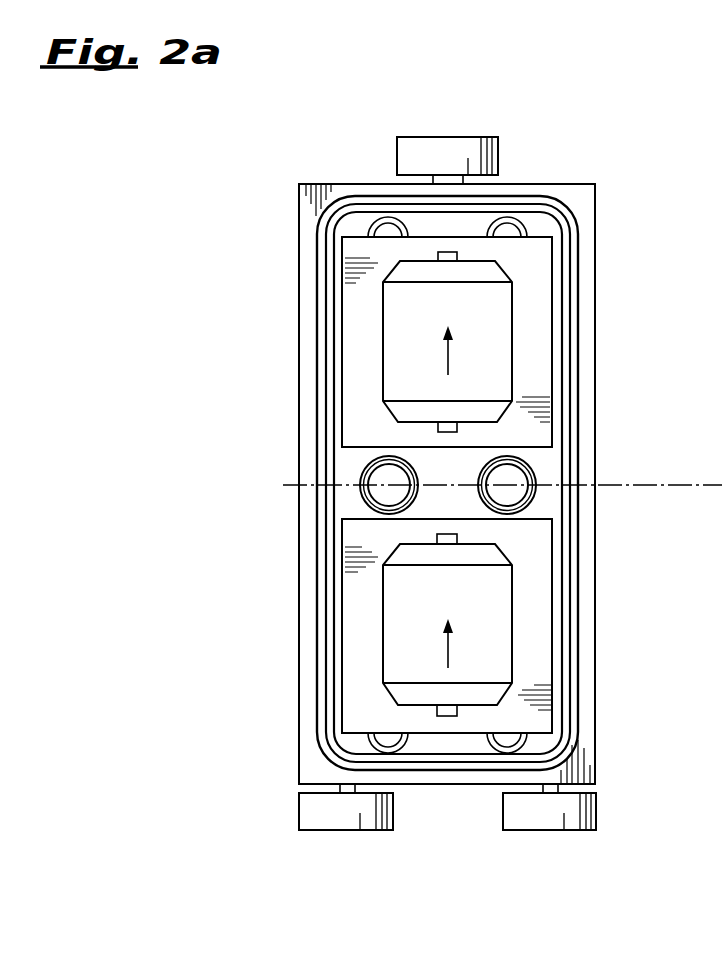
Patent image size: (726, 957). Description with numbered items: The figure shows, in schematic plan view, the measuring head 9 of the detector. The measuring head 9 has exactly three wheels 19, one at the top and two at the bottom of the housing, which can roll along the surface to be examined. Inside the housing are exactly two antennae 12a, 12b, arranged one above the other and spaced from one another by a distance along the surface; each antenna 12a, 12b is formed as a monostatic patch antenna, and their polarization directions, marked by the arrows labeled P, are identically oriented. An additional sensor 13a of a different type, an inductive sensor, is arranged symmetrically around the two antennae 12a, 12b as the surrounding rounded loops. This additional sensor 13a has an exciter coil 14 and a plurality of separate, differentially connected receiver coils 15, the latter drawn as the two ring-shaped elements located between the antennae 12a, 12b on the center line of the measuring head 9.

The measuring head 9 is at (358, 157).
The antenna 12a is at (501, 319).
The antenna 12b is at (501, 612).
The additional sensor 13a is at (578, 436).
The exciter coil 14 is at (570, 538).
The receiver coils 15 is at (481, 462).
The wheels 19 is at (452, 154).